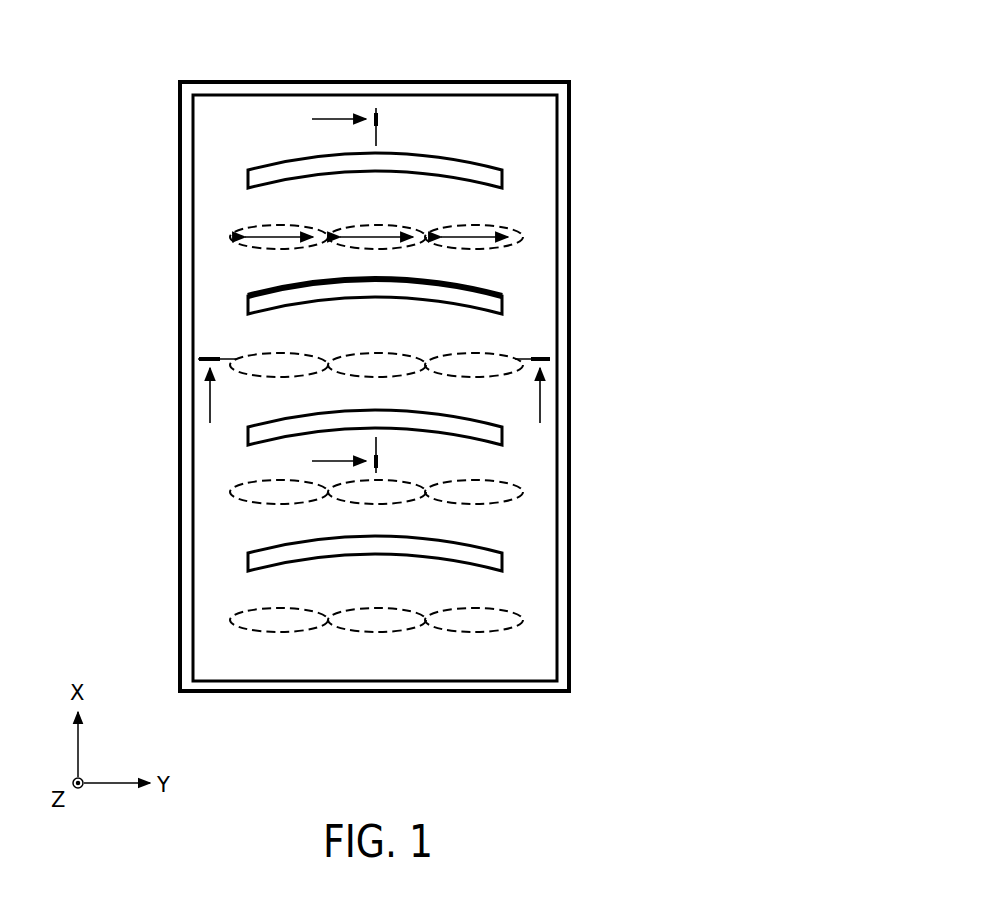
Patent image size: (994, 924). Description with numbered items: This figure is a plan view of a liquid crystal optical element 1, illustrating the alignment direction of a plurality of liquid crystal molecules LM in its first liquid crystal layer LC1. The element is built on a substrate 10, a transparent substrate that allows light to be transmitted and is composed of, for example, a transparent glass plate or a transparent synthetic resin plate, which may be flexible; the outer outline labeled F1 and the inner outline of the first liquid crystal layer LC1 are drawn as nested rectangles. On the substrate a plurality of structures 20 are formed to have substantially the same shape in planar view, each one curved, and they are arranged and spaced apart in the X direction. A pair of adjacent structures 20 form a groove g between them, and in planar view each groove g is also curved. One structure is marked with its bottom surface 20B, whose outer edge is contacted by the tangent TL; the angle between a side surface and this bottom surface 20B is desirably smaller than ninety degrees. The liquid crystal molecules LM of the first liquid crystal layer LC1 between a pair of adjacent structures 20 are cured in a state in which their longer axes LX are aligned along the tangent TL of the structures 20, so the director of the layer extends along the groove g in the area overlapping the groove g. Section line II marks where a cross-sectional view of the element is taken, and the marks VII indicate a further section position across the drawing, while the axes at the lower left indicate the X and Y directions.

The liquid crystal optical element 1 is at (592, 52).
The first surface F1 is at (215, 86).
The substrate 10 is at (572, 98).
The first liquid crystal layer LC1 is at (559, 134).
The structure 20 is at (503, 178).
The bottom surface 20B is at (503, 310).
The tangent TL is at (268, 293).
The liquid crystal molecules LM is at (522, 236).
The longer axis LX is at (270, 240).
The line II- II is at (340, 119).
The section line VII is at (209, 407).
The groove g is at (306, 200).